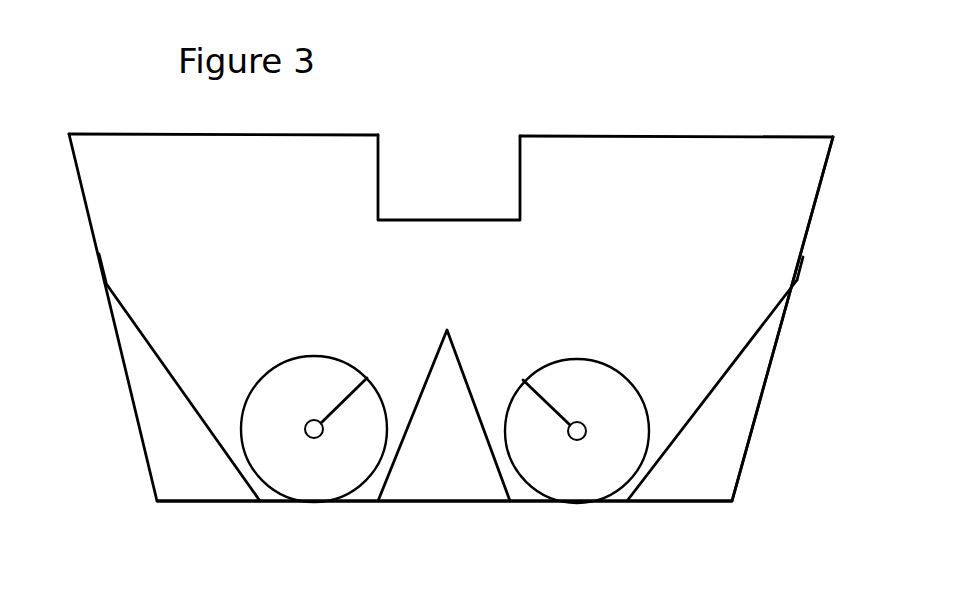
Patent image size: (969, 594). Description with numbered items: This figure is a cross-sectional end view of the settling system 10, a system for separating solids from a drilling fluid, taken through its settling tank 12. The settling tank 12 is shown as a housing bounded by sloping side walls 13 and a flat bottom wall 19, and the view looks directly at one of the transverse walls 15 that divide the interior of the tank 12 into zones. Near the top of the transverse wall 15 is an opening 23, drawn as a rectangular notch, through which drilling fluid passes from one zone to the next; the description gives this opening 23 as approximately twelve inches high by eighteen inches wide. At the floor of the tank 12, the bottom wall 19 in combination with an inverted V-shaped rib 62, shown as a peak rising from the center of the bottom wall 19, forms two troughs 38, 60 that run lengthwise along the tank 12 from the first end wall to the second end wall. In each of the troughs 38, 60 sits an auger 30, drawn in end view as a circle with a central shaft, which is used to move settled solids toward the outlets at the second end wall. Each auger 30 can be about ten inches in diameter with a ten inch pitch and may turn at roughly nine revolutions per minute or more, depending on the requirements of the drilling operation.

The settling system 10 is at (773, 421).
The settling tank 12 is at (812, 220).
The side walls 13 is at (103, 272).
The transverse wall 15 is at (683, 177).
The bottom wall 19 is at (357, 502).
The opening 23 is at (448, 165).
The auger 30 is at (303, 472).
The trough 38 is at (712, 390).
The trough 60 is at (182, 391).
The inverted V-shaped rib 62 is at (458, 348).